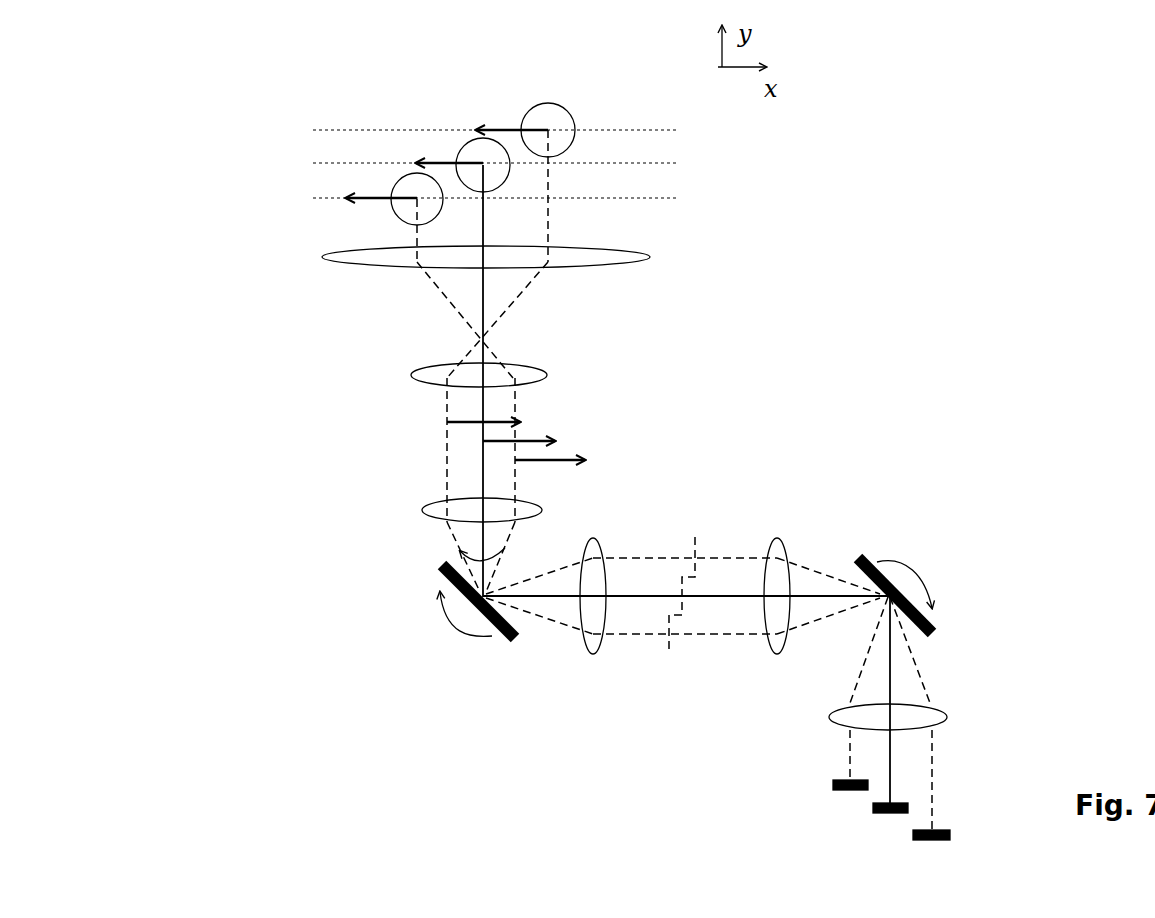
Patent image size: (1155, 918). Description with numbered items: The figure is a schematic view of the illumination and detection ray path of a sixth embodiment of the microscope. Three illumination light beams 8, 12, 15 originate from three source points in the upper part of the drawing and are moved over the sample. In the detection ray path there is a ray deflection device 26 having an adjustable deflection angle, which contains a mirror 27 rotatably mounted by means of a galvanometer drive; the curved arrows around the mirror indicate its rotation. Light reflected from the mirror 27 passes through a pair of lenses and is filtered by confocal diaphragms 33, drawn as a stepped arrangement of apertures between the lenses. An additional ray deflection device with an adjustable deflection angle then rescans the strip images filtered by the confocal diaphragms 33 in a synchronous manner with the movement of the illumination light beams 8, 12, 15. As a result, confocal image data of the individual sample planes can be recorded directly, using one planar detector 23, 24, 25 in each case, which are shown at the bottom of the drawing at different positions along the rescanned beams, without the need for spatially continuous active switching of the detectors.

The illumination light beam 8 is at (547, 108).
The illumination light beam 12 is at (470, 147).
The illumination light beam 15 is at (403, 184).
The planar detector 23 is at (847, 792).
The planar detector 24 is at (898, 815).
The planar detector 25 is at (942, 830).
The ray deflection device 26 is at (392, 638).
The mirror 27 is at (517, 633).
The confocal diaphragm 33 is at (664, 607).